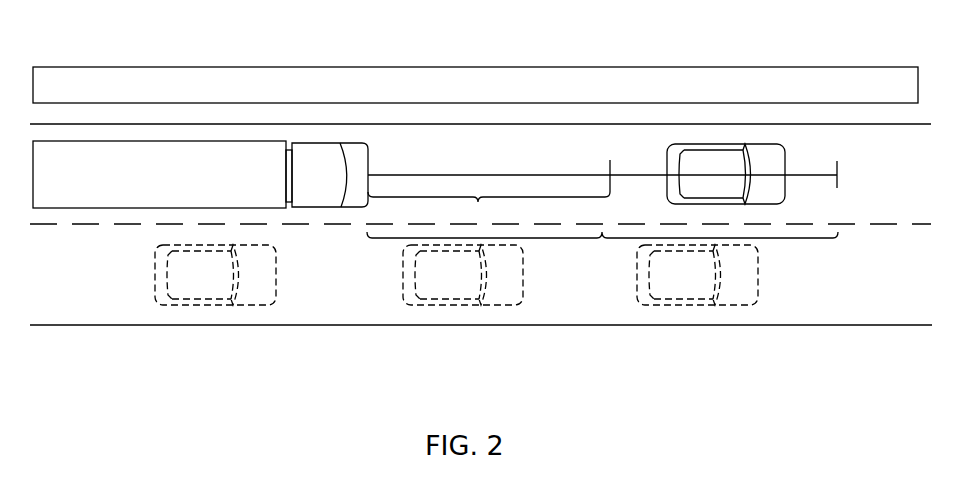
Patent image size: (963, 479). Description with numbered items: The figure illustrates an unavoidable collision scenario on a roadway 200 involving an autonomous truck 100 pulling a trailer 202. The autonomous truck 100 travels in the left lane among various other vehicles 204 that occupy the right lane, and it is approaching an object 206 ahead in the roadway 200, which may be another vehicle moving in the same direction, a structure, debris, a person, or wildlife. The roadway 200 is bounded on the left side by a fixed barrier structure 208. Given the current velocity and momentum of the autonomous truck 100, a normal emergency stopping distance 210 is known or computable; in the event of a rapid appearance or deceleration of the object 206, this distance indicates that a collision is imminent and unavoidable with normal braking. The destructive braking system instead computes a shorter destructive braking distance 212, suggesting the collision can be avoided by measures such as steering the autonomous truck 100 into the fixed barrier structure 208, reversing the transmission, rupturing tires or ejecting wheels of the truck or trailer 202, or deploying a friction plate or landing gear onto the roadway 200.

The autonomous truck 100 is at (355, 207).
The roadway 200 is at (325, 346).
The trailer 202 is at (135, 195).
The other vehicles 204 is at (220, 306).
The object 206 is at (787, 152).
The fixed barrier structure 208 is at (458, 66).
The normal emergency stopping distance 210 is at (602, 249).
The destructive braking distance 212 is at (602, 191).